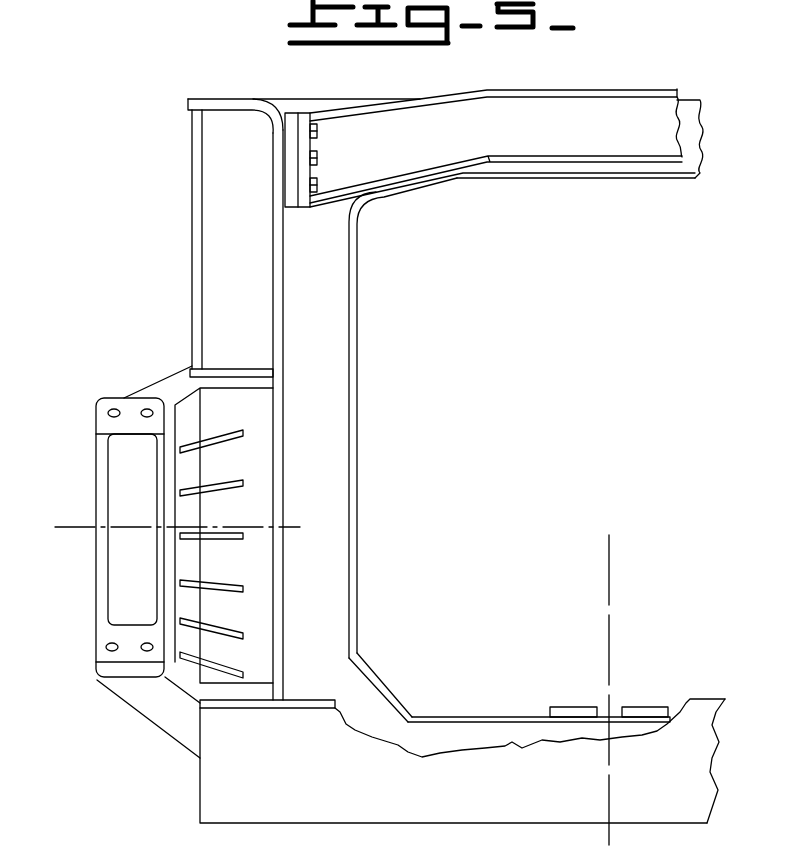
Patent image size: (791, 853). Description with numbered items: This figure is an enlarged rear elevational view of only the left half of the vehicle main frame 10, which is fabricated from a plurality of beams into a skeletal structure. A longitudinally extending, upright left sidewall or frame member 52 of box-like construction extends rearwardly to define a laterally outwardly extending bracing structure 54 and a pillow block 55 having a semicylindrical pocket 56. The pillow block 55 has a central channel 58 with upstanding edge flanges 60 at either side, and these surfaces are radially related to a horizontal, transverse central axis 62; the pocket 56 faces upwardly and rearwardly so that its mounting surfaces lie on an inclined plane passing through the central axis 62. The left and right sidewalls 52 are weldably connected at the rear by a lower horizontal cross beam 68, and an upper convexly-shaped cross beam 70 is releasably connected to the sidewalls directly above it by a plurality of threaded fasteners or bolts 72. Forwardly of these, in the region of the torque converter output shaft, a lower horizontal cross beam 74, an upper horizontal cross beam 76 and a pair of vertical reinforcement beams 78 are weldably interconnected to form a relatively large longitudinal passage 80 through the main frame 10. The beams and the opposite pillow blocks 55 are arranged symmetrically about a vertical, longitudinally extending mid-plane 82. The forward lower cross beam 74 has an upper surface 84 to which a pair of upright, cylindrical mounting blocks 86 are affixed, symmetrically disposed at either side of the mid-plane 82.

The main frame 10 is at (190, 162).
The left sidewall or frame member 52 is at (287, 285).
The bracing structure 54 is at (186, 378).
The pillow block 55 is at (135, 402).
The semicylindrical pocket 56 is at (127, 624).
The central channel 58 is at (115, 558).
The upstanding edge flanges 60 is at (157, 577).
The central axis 62 is at (291, 527).
The lower horizontal cross beam 68 is at (217, 793).
The upper convexly-shaped cross beam 70 is at (470, 112).
The threaded fasteners or bolts 72 is at (320, 158).
The lower horizontal cross beam 74 is at (457, 737).
The upper horizontal cross beam 76 is at (598, 169).
The vertical reinforcement beams 78 is at (333, 340).
The longitudinal passage 80 is at (366, 546).
The mid-plane 82 is at (609, 557).
The upper surface 84 is at (518, 717).
The cylindrical mounting blocks 86 is at (575, 710).